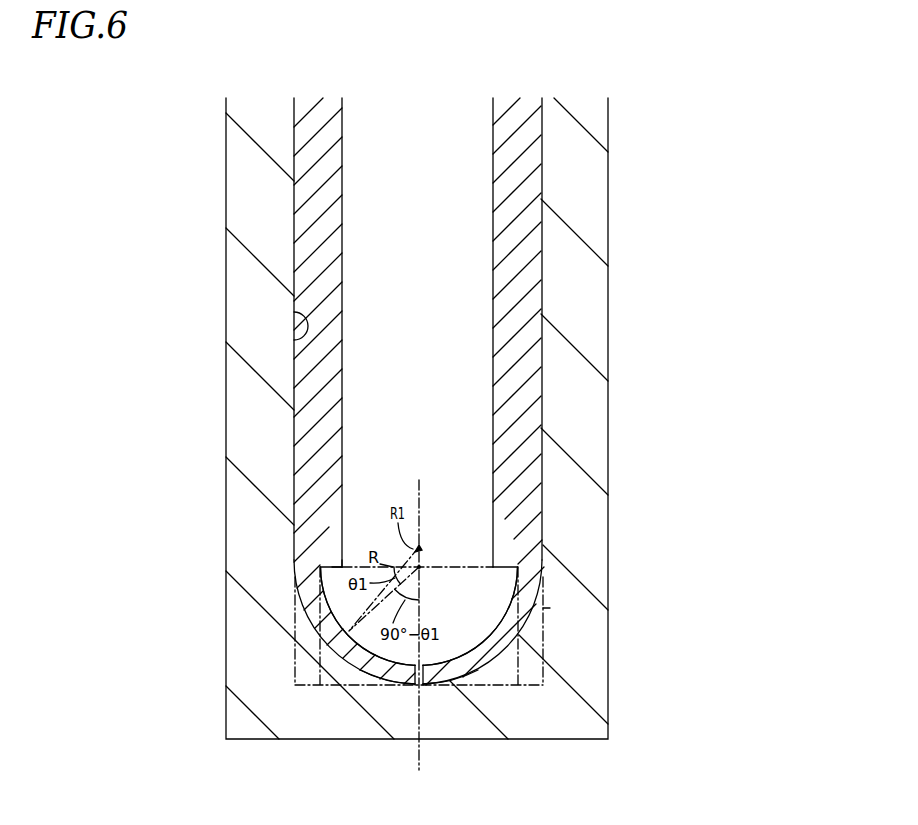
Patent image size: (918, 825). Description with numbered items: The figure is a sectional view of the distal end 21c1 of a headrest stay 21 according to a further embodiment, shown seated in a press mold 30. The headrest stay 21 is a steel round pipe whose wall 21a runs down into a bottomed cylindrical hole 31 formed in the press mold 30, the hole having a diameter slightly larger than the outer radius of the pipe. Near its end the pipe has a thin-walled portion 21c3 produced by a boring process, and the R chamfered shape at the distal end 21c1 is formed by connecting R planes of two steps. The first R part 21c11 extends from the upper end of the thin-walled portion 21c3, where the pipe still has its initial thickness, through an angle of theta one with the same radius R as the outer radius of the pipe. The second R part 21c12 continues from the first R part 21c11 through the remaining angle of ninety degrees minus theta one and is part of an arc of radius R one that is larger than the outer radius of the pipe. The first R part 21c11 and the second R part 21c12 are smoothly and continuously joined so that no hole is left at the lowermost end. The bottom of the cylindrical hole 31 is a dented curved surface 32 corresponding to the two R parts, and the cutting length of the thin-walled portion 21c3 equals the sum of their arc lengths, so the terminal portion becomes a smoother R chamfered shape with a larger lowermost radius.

The headrest stay 21 is at (420, 445).
The tube side wall 21a is at (528, 304).
The distal end 21c1 is at (527, 617).
The thin-walled portion 21c3 is at (550, 608).
The first R part 21c11 is at (342, 622).
The second R part 21c12 is at (360, 680).
The press mold 30 is at (592, 424).
The cylindrical hole 31 is at (300, 313).
The concave curved surface 32 is at (340, 572).